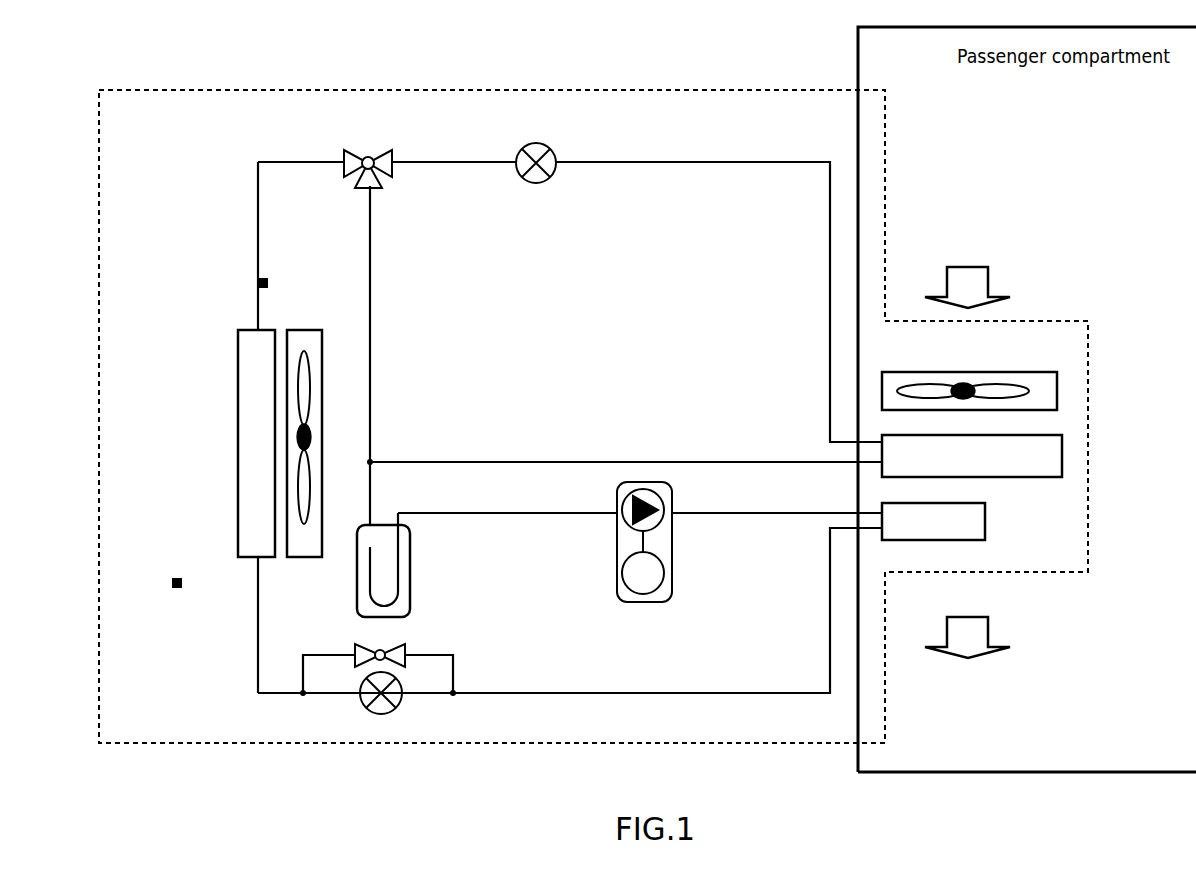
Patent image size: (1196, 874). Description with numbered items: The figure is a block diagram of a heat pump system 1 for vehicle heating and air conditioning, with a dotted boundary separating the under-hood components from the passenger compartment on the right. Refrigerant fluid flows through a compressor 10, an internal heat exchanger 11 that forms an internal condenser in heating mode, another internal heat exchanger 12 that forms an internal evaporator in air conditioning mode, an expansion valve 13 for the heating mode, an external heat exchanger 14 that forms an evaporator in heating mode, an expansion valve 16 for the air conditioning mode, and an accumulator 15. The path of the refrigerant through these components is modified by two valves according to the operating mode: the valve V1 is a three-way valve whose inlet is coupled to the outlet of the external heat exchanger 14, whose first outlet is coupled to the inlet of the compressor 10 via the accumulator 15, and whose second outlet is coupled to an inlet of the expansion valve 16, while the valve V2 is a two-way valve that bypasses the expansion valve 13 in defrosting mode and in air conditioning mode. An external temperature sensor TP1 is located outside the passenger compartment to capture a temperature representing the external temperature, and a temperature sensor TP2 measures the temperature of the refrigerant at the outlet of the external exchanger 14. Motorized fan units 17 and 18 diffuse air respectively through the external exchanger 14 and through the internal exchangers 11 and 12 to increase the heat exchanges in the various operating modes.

The heat pump system 1 is at (652, 84).
The compressor 10 is at (673, 545).
The internal heat exchanger 11 is at (985, 520).
The internal heat exchanger 12 is at (1030, 477).
The expansion valve 13 is at (395, 708).
The external heat exchanger 14 is at (240, 415).
The accumulator 15 is at (410, 560).
The expansion valve 16 is at (552, 151).
The motorized fan unit 17 is at (312, 329).
The motorized fan unit 18 is at (1025, 372).
The three-way valve V1 is at (350, 147).
The two-way valve V2 is at (403, 650).
The external temperature sensor TP1 is at (172, 589).
The temperature sensor TP2 is at (258, 280).